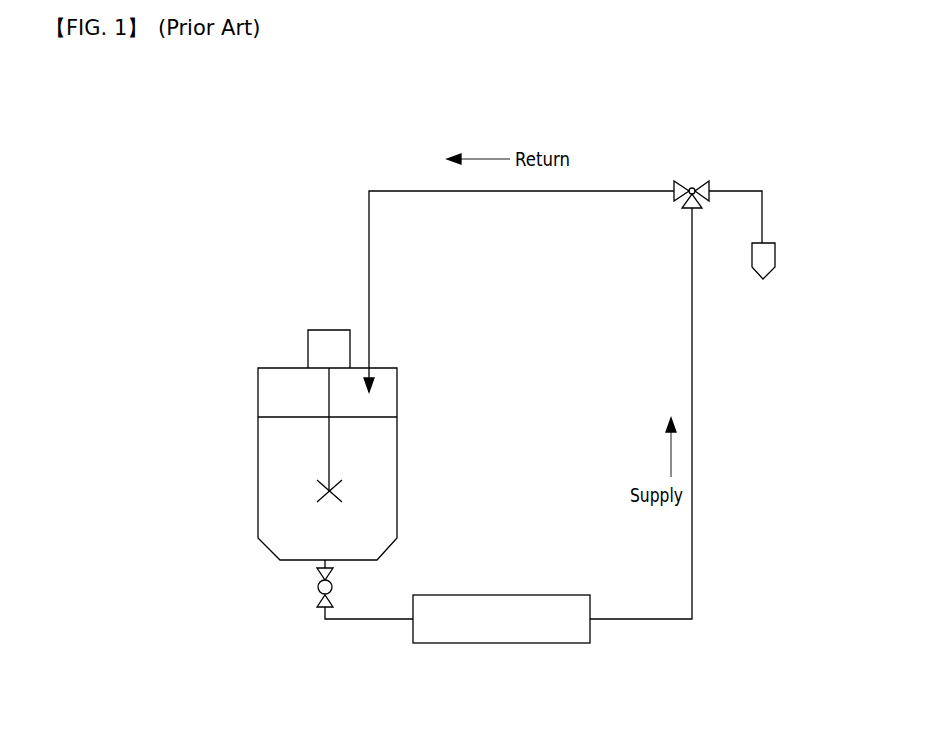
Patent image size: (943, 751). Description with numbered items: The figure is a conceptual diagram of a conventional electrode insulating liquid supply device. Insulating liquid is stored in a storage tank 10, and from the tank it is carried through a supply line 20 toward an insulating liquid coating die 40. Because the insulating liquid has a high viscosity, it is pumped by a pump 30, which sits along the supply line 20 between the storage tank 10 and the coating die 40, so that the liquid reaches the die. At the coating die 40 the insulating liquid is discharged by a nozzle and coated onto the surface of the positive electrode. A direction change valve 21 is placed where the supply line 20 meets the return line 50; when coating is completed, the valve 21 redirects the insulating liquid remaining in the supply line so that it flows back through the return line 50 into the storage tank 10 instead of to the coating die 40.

The storage tank 10 is at (273, 471).
The supply line 20 is at (693, 397).
The direction change valve 21 is at (700, 182).
The pump 30 is at (490, 593).
The insulating liquid coating die 40 is at (775, 245).
The return line 50 is at (427, 190).